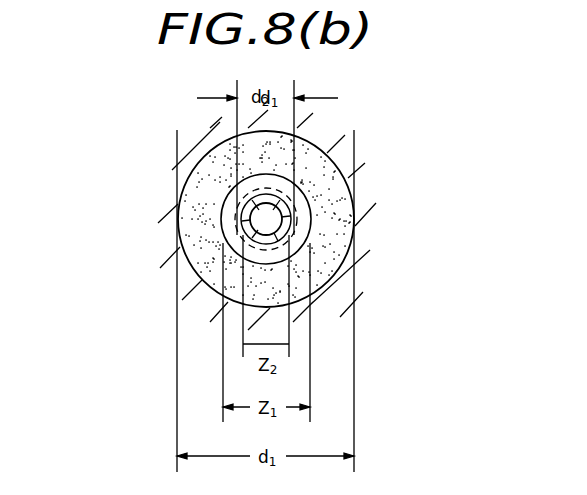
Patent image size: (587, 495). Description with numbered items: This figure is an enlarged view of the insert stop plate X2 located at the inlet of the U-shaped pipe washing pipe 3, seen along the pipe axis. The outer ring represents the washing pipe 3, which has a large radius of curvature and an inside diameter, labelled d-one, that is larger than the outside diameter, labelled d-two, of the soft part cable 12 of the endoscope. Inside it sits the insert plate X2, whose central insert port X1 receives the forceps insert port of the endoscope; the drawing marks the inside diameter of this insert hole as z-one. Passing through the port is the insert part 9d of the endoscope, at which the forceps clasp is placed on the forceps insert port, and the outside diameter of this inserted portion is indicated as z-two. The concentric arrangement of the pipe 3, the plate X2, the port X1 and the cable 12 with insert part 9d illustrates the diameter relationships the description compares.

The U-shaped pipe washing pipe 3 is at (284, 203).
The insert port X1 is at (320, 173).
The insert plate X2 is at (300, 224).
The soft part cable 12 is at (242, 230).
The insert part 9d is at (254, 246).